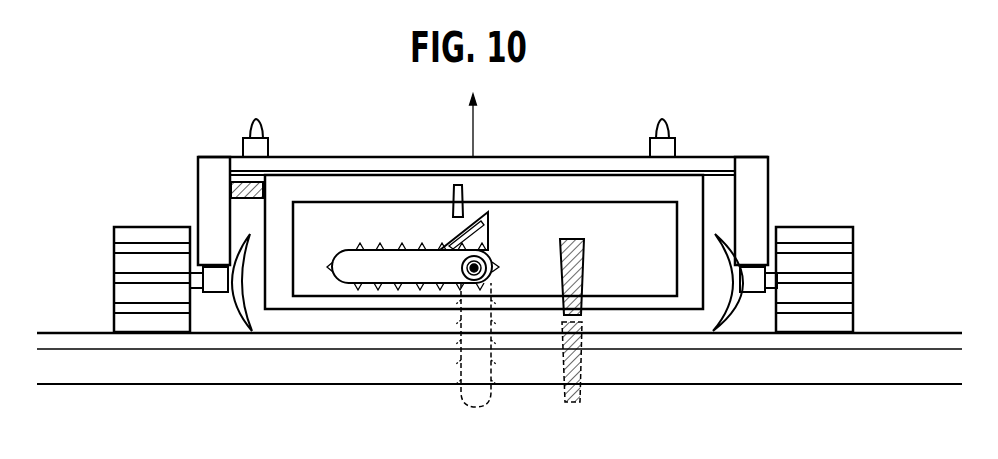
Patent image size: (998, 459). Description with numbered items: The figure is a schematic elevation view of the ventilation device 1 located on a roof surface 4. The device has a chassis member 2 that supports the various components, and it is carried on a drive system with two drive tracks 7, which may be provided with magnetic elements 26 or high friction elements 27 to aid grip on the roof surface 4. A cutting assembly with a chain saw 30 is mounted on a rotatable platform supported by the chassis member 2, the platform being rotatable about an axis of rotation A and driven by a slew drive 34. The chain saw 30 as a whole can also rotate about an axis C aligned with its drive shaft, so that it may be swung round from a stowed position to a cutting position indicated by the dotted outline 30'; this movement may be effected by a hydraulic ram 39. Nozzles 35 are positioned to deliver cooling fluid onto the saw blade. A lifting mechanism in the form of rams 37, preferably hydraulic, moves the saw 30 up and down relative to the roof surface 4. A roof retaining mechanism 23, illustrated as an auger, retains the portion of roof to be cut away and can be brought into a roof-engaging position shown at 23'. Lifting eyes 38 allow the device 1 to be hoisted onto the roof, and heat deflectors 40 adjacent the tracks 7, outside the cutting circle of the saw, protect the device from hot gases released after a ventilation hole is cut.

The ventilation device 1 is at (790, 107).
The chassis member 2 is at (350, 157).
The roof surface 4 is at (927, 332).
The drive tracks 7 is at (135, 227).
The retaining mechanism 23 is at (595, 276).
The roof-engaging position of retaining mechanism 23' is at (600, 371).
The magnetic elements 26 is at (118, 280).
The high friction elements 27 is at (832, 282).
The chain saw 30 is at (412, 253).
The cutting position of chain saw 30' is at (450, 351).
The slew drive 34 is at (266, 190).
The nozzles 35 is at (466, 194).
The rams 37 is at (208, 177).
The lifting eyes 38 is at (262, 124).
The hydraulic ram 39 is at (453, 243).
The heat deflectors 40 is at (237, 313).
The axis of rotation A is at (477, 130).
The axis C is at (500, 265).